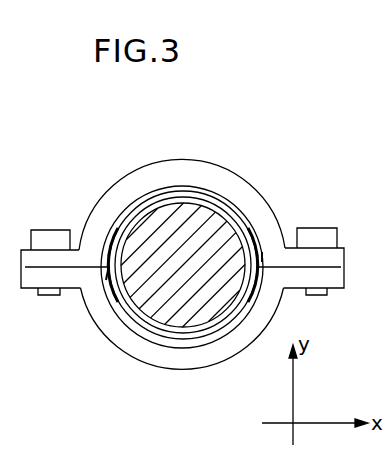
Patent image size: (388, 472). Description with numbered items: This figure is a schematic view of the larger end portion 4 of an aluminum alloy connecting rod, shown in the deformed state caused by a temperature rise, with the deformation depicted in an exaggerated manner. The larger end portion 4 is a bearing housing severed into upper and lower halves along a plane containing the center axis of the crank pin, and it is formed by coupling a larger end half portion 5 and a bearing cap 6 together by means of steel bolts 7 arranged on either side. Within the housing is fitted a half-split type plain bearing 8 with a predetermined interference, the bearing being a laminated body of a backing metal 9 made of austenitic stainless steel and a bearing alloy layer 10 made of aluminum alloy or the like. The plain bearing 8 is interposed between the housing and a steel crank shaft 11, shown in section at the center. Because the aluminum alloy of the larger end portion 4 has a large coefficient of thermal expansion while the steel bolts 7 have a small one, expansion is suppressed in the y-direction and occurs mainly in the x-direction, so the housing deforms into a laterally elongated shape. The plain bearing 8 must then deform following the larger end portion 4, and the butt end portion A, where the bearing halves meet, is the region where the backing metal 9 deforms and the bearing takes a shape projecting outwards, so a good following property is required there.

The larger end portion 4 is at (95, 162).
The larger end half portion 5 is at (145, 180).
The bearing cap 6 is at (148, 358).
The steel bolts 7 is at (45, 232).
The plain bearing 8 is at (186, 196).
The backing metal 9 is at (210, 200).
The bearing alloy layer 10 is at (229, 213).
The crank shaft 11 is at (185, 312).
The butt end portion A is at (262, 252).